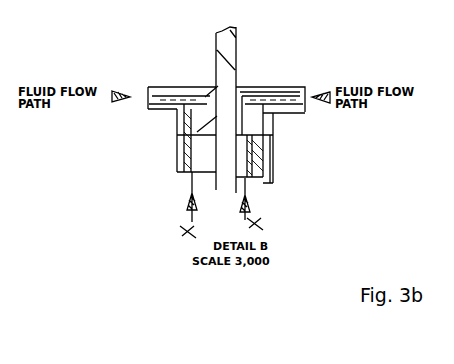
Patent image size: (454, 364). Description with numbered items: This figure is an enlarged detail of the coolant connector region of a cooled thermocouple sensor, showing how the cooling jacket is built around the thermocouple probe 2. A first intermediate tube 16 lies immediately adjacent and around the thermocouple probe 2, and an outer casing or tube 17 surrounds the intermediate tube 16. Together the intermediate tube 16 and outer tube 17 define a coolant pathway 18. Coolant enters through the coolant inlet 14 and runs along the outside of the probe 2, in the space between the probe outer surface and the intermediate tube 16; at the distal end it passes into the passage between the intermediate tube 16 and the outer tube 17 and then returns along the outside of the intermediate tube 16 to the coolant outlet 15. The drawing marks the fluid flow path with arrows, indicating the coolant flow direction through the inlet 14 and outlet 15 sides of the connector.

The thermocouple probe 2 is at (202, 171).
The coolant inlet 14 is at (305, 112).
The coolant outlet 15 is at (148, 109).
The first intermediate tube 16 is at (190, 173).
The outer casing or tube 17 is at (265, 176).
The coolant pathway 18 is at (248, 135).